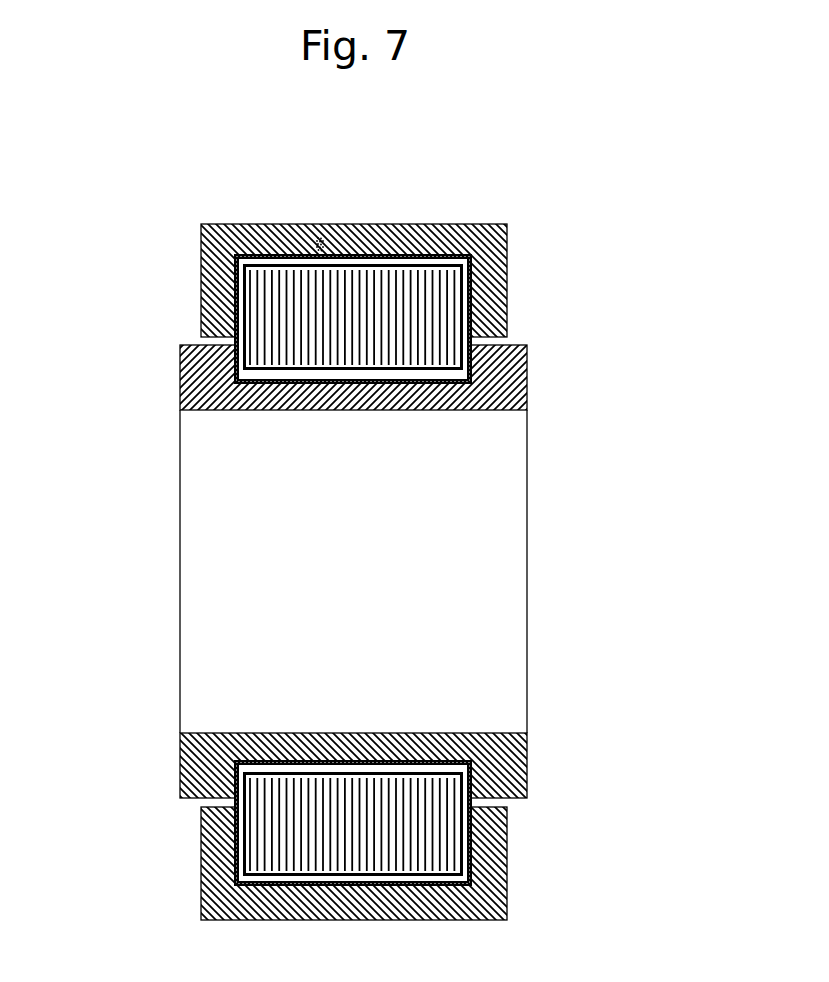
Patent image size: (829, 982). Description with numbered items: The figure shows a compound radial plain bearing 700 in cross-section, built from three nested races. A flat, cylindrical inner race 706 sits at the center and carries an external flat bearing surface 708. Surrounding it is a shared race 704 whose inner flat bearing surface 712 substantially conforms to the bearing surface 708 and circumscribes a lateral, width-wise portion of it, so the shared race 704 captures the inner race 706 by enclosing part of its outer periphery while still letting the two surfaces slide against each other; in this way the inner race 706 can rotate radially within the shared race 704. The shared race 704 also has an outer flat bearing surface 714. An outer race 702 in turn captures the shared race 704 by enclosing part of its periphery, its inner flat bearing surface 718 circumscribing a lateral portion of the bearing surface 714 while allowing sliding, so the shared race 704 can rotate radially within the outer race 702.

The compound radial plain bearing 700 is at (541, 171).
The outer race 702 is at (200, 270).
The shared race 704 is at (265, 341).
The inner race 706 is at (180, 392).
The external flat bearing surface 708 is at (364, 398).
The inner flat bearing surface 712 is at (363, 355).
The outer flat bearing surface 714 is at (317, 282).
The inner flat bearing surface 718 is at (315, 223).